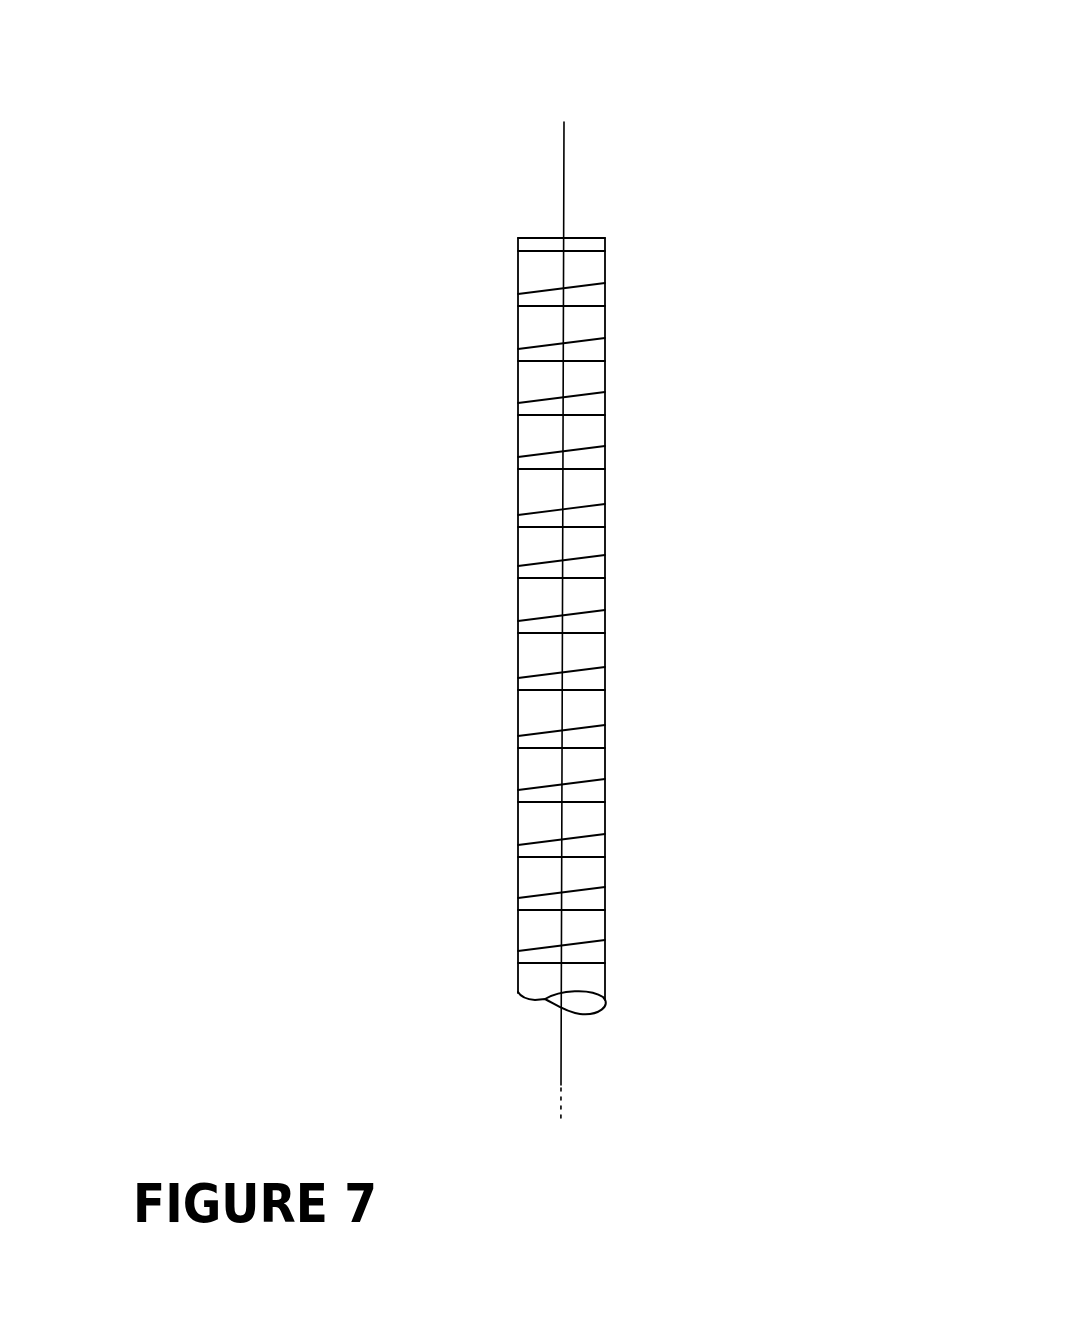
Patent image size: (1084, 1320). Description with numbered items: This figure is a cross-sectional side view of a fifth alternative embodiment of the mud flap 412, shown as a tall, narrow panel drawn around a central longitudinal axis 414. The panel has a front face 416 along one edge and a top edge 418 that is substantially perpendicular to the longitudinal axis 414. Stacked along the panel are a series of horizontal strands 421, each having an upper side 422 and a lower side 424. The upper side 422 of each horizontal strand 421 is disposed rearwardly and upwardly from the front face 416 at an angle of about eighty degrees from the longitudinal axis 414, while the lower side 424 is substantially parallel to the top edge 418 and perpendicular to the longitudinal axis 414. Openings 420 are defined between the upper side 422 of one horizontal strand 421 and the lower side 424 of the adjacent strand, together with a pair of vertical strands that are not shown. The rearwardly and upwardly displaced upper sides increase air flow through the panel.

The coil assembly 412 is at (663, 453).
The longitudinal axis 414 is at (567, 178).
The front face 416 is at (517, 597).
The top edge 418 is at (532, 238).
The openings 420 is at (535, 327).
The horizontal strand 421 is at (545, 460).
The upper side 422 is at (585, 727).
The lower side 424 is at (583, 753).